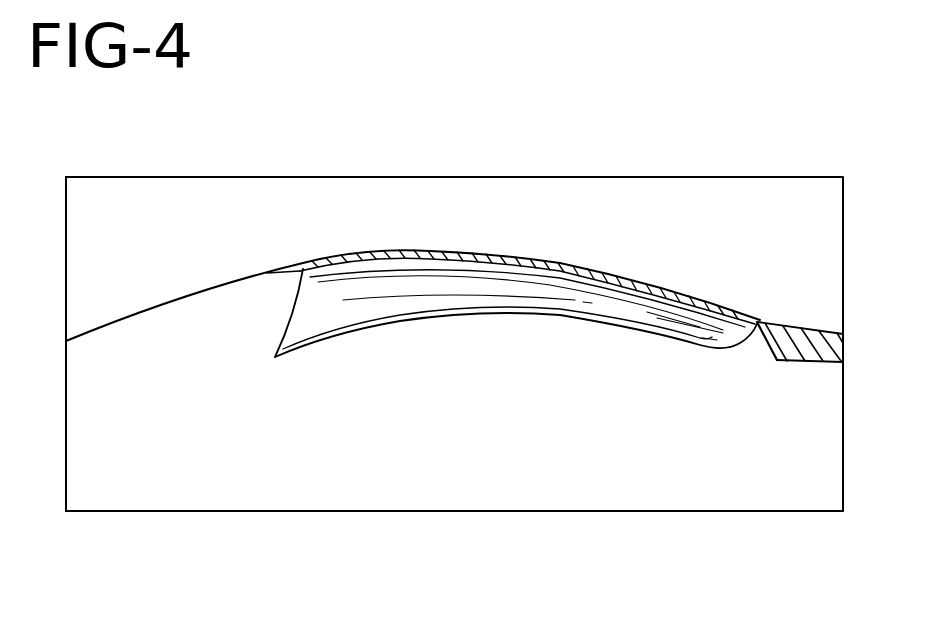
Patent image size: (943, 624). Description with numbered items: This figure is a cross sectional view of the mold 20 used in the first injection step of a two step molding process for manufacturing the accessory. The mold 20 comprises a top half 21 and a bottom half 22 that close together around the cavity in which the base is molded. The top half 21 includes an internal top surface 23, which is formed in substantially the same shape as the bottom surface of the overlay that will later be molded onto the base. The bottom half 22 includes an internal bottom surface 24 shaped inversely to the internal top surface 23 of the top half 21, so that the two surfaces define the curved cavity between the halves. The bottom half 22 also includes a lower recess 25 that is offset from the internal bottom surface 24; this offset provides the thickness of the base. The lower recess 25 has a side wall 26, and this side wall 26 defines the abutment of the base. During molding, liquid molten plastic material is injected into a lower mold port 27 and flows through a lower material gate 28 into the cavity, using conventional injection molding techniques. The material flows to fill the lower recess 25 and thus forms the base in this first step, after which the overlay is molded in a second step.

The mold 20 is at (350, 150).
The top half 21 is at (647, 207).
The bottom half 22 is at (613, 483).
The internal top surface 23 is at (510, 257).
The internal bottom surface 24 is at (103, 325).
The lower recess 25 is at (423, 262).
The side wall 26 is at (263, 270).
The lower mold port 27 is at (838, 343).
The lower material gate 28 is at (760, 320).